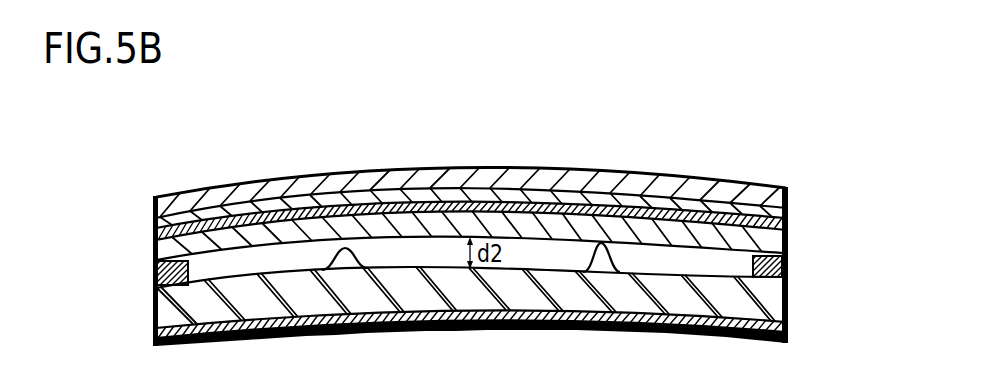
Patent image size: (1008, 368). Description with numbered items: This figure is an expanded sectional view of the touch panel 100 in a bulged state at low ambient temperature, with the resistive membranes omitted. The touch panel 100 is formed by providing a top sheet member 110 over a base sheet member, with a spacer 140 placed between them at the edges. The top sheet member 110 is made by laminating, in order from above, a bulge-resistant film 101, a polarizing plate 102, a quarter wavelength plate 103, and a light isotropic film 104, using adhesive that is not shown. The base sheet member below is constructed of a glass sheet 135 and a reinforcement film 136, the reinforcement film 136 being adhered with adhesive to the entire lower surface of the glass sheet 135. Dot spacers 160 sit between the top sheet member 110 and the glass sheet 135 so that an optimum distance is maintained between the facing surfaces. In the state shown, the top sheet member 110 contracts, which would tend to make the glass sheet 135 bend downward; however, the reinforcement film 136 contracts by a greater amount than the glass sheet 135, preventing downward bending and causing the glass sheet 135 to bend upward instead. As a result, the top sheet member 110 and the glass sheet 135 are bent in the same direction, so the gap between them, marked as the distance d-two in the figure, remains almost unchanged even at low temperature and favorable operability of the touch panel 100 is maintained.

The touch panel 100 is at (307, 138).
The bulge-resistant film 101 is at (768, 185).
The polarizing plate 102 is at (787, 204).
The quarter wavelength plate 103 is at (787, 224).
The light isotropic film 104 is at (787, 246).
The top sheet member 110 is at (861, 127).
The glass sheet 135 is at (787, 301).
The reinforcement film 136 is at (787, 334).
The spacer 140 is at (156, 269).
The dot spacers 160 is at (607, 263).